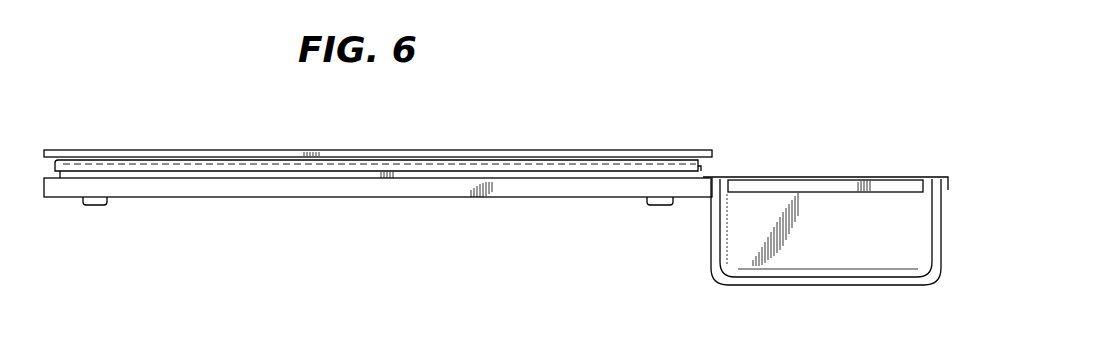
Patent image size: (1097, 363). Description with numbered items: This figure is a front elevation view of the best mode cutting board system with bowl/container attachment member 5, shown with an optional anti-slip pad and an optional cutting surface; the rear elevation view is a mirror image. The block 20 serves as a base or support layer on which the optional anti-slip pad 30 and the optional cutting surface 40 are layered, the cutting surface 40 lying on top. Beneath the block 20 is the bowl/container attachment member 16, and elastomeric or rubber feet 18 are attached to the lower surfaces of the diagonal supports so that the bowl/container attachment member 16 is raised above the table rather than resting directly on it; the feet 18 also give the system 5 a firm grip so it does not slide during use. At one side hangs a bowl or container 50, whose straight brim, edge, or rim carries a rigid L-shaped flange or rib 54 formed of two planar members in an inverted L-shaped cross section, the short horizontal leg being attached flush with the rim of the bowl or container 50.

The cutting board system with bowl/container attachment member 5 is at (134, 108).
The bowl/container attachment member 16 is at (164, 198).
The elastomeric or rubber feet 18 is at (92, 206).
The block 20 is at (250, 171).
The anti-slip pad 30 is at (700, 167).
The cutting surface 40 is at (569, 150).
The bowl or container 50 is at (808, 257).
The L-shaped flange or rib 54 is at (828, 185).